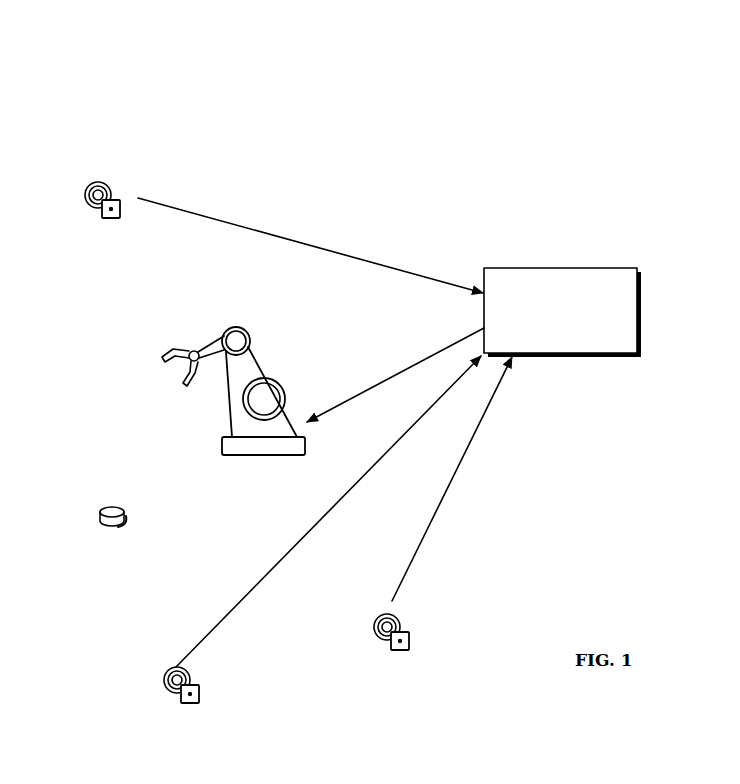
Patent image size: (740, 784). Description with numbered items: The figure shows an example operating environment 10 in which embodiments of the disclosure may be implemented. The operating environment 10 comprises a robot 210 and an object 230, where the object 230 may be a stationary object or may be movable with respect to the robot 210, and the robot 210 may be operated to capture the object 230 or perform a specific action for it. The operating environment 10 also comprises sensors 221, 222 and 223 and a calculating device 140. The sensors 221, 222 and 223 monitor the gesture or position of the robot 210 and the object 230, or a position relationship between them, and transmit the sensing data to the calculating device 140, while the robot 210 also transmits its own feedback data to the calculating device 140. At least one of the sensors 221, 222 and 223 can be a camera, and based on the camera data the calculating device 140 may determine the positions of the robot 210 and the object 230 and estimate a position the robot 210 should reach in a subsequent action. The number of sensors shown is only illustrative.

The operating environment 10 is at (383, 63).
The calculating device 140 is at (612, 268).
The robot 210 is at (258, 355).
The sensor 221 is at (110, 182).
The sensor 222 is at (187, 666).
The sensor 223 is at (397, 612).
The object 230 is at (108, 506).